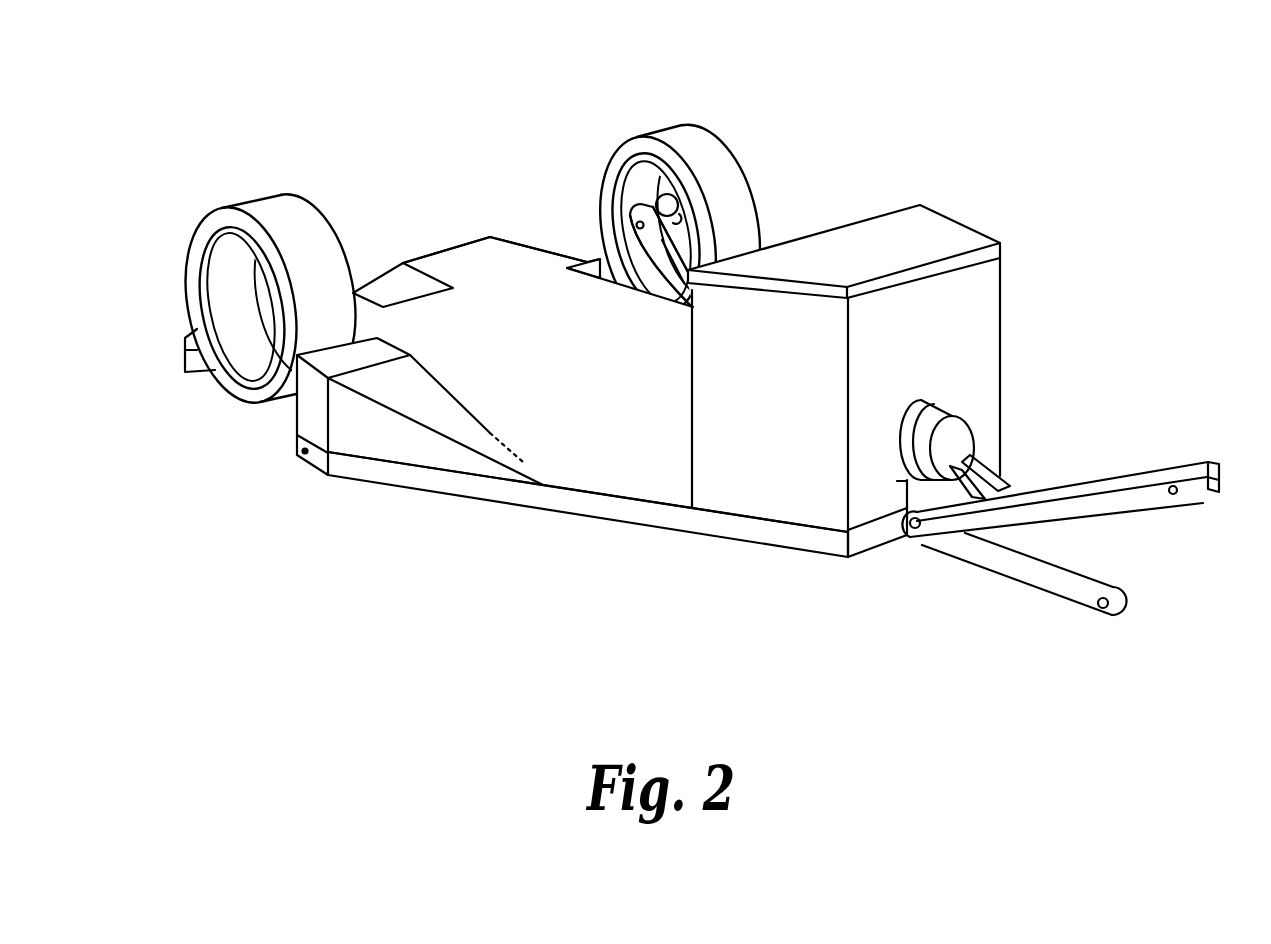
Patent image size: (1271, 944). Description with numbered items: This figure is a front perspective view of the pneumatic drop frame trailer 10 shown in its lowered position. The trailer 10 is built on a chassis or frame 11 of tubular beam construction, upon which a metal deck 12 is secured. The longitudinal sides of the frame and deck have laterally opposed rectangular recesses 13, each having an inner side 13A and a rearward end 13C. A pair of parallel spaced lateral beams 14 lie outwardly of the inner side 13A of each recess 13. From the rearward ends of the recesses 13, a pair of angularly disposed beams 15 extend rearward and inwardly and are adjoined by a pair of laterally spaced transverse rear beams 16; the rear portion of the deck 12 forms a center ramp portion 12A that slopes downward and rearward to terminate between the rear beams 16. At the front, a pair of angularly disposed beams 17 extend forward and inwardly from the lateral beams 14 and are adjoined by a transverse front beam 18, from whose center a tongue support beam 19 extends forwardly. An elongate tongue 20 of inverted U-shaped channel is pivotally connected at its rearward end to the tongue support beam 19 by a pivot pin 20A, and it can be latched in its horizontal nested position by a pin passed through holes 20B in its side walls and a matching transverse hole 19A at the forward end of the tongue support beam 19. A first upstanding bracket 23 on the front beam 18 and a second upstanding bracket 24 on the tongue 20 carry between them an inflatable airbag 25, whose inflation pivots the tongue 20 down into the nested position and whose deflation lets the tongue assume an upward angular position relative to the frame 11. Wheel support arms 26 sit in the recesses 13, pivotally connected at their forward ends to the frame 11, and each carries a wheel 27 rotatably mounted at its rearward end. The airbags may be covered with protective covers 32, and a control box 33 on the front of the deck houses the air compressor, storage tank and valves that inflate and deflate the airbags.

The trailer 10 is at (482, 118).
The frame 11 is at (460, 490).
The metal deck 12 is at (612, 403).
The center ramp portion 12A is at (385, 295).
The rectangular recess 13 is at (648, 294).
The inner side 13A is at (638, 296).
The rearward end 13C is at (588, 256).
The lateral beam 14 is at (310, 463).
The angularly disposed beam 15 is at (517, 243).
The transverse rear beam 16 is at (447, 256).
The angularly disposed beam 17 is at (588, 517).
The transverse front beam 18 is at (856, 560).
The tongue support beam 19 is at (1034, 580).
The transverse hole 19A is at (1100, 610).
The tongue 20 is at (1190, 466).
The pivot pin 20A is at (905, 528).
The holes 20B is at (1171, 496).
The first upstanding bracket 23 is at (901, 482).
The second upstanding bracket 24 is at (978, 452).
The airbag 25 is at (950, 410).
The wheel support arm 26 is at (680, 248).
The wheel 27 is at (264, 205).
The protective cover 32 is at (443, 404).
The control box 33 is at (923, 236).